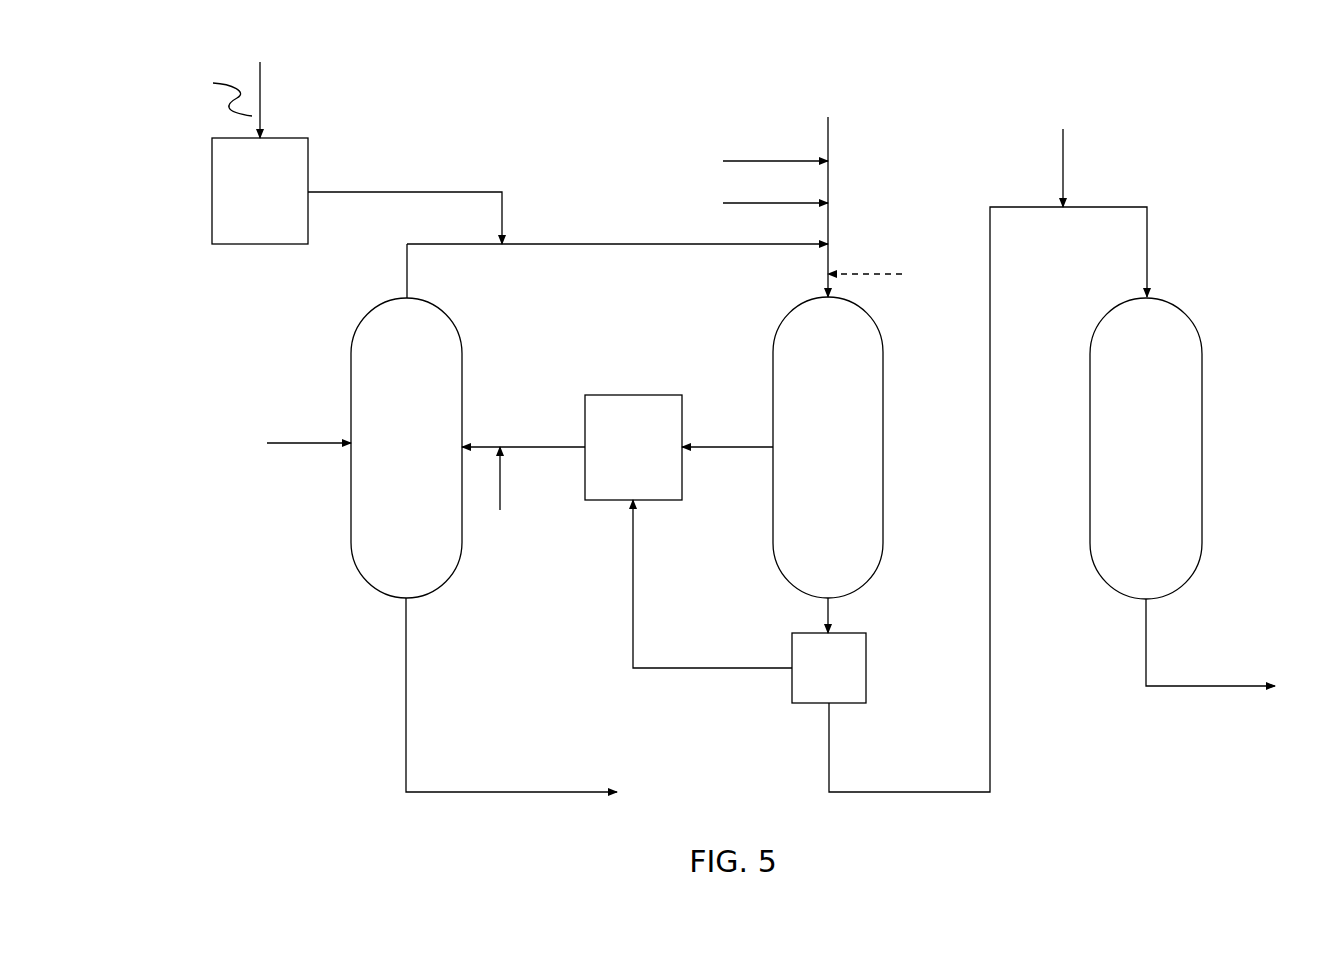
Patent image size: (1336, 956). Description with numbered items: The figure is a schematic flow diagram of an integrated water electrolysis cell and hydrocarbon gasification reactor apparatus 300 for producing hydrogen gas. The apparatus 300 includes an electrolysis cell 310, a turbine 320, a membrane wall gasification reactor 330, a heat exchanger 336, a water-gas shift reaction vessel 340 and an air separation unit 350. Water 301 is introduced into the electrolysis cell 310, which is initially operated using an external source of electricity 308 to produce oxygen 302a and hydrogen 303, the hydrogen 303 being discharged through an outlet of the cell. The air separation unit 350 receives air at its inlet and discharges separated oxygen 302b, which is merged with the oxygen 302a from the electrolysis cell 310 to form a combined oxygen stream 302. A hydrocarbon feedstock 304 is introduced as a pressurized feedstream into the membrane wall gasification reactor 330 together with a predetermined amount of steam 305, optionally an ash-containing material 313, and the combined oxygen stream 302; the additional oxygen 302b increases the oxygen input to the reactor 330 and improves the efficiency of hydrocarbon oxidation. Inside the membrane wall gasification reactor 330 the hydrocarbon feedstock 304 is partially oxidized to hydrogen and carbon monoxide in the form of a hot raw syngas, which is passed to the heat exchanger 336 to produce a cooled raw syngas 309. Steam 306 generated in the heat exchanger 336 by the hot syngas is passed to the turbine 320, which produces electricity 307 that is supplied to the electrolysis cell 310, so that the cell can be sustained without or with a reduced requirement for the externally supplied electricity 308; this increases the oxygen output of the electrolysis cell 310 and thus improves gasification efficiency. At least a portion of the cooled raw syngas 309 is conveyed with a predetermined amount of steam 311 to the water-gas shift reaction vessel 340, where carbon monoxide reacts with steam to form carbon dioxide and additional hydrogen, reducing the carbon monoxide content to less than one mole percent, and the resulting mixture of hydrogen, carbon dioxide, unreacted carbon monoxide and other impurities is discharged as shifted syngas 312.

The integrated water electrolysis cell and hydrocarbon gasification reactor apparatu 300 is at (383, 28).
The air separation unit 350 is at (248, 153).
The separated oxygen 302b is at (418, 191).
The produced oxygen 302a is at (404, 252).
The combined oxygen stream 302 is at (725, 246).
The hydrocarbon feedstock 304 is at (805, 157).
The steam 305 is at (742, 200).
The ash-containing material 313 is at (858, 270).
The electrolysis cell 310 is at (406, 448).
The water 301 is at (302, 440).
The turbine 320 is at (633, 447).
The electricity 307 is at (566, 447).
The external source of electricity 308 is at (501, 494).
The membrane wall gasification reactor 330 is at (828, 357).
The heat exchanger 336 is at (829, 650).
The steam 306 is at (745, 670).
The cooled raw syngas 309 is at (955, 790).
The steam 311 is at (1060, 175).
The water-gas shift reaction vessel 340 is at (1146, 448).
The shifted syngas 312 is at (1186, 694).
The produced hydrogen 303 is at (560, 792).